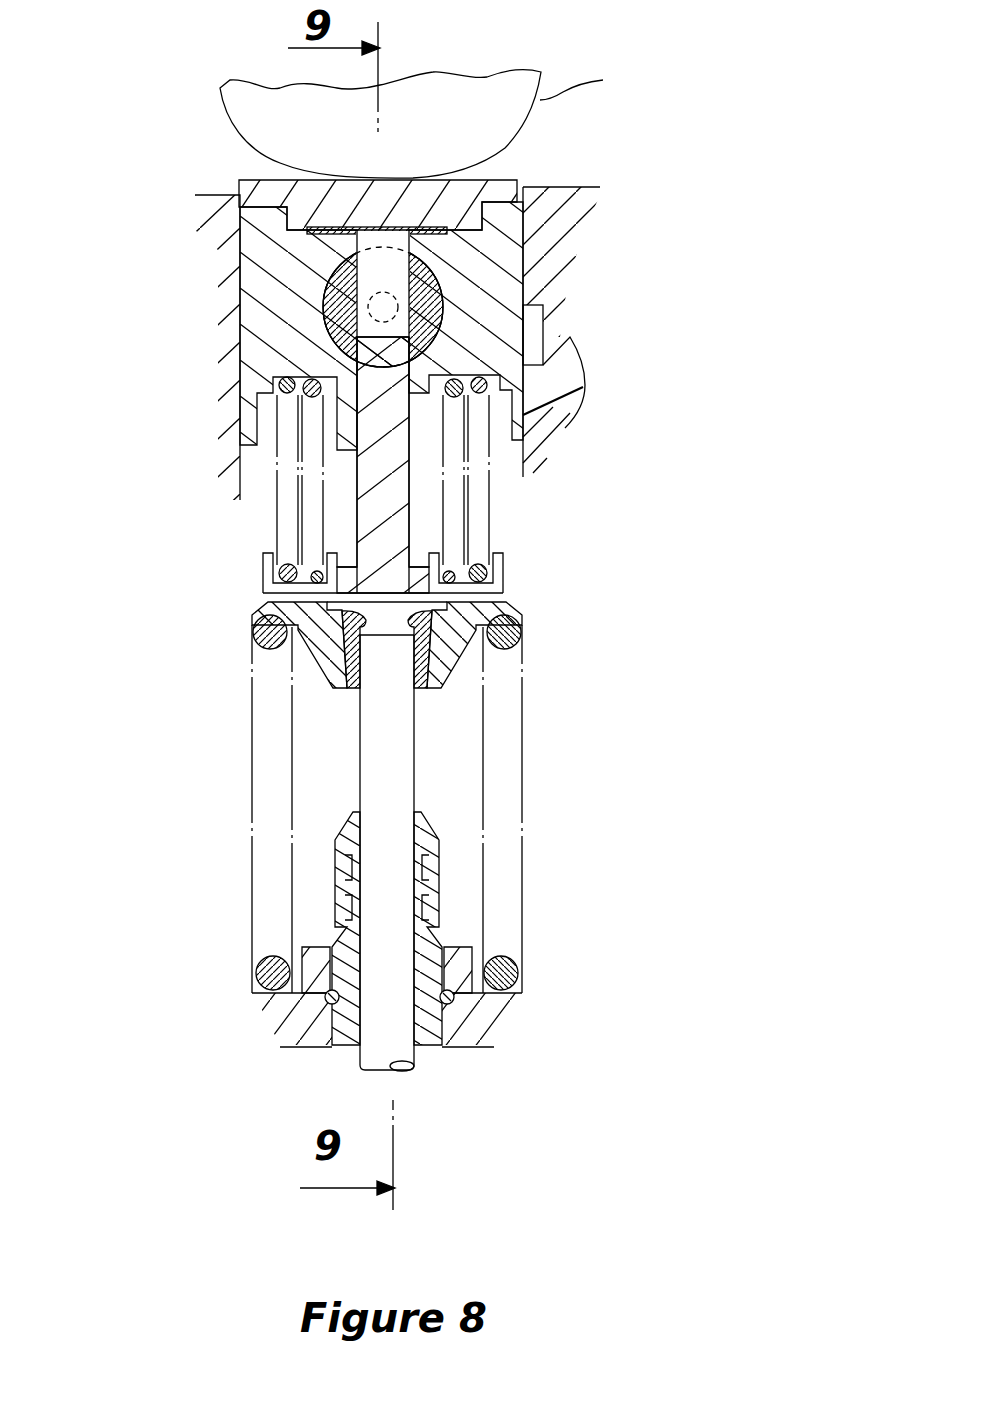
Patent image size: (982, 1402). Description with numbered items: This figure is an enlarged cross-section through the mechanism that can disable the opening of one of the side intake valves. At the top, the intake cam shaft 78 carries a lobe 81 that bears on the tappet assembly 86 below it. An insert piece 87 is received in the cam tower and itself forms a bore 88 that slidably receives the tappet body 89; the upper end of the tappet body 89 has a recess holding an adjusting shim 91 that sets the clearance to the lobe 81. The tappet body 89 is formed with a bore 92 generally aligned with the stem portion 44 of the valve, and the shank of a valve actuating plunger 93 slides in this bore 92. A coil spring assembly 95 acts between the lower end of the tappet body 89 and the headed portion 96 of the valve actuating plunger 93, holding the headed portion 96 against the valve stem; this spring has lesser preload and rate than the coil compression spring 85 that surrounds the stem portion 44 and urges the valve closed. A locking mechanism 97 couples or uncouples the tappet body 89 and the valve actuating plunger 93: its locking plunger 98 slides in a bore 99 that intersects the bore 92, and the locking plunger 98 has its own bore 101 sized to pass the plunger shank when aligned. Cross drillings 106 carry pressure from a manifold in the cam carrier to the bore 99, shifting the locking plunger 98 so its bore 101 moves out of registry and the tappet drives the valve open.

The stem portion 44 is at (420, 793).
The intake cam shaft 78 is at (500, 90).
The lobe 81 is at (594, 78).
The coil compression spring 85 is at (416, 758).
The tappet assembly 86 is at (170, 333).
The insert piece 87 is at (553, 187).
The bore 88 is at (523, 243).
The tappet body 89 is at (528, 271).
The adjusting shim 91 is at (482, 178).
The bore 92 is at (410, 416).
The valve actuating plunger 93 is at (413, 525).
The coil spring assembly 95 is at (492, 502).
The headed portion 96 is at (510, 577).
The locking mechanism 97 is at (440, 368).
The locking plunger 98 is at (326, 305).
The bore 99 is at (440, 316).
The bore 101 is at (355, 285).
The cross drillings 106 is at (565, 390).